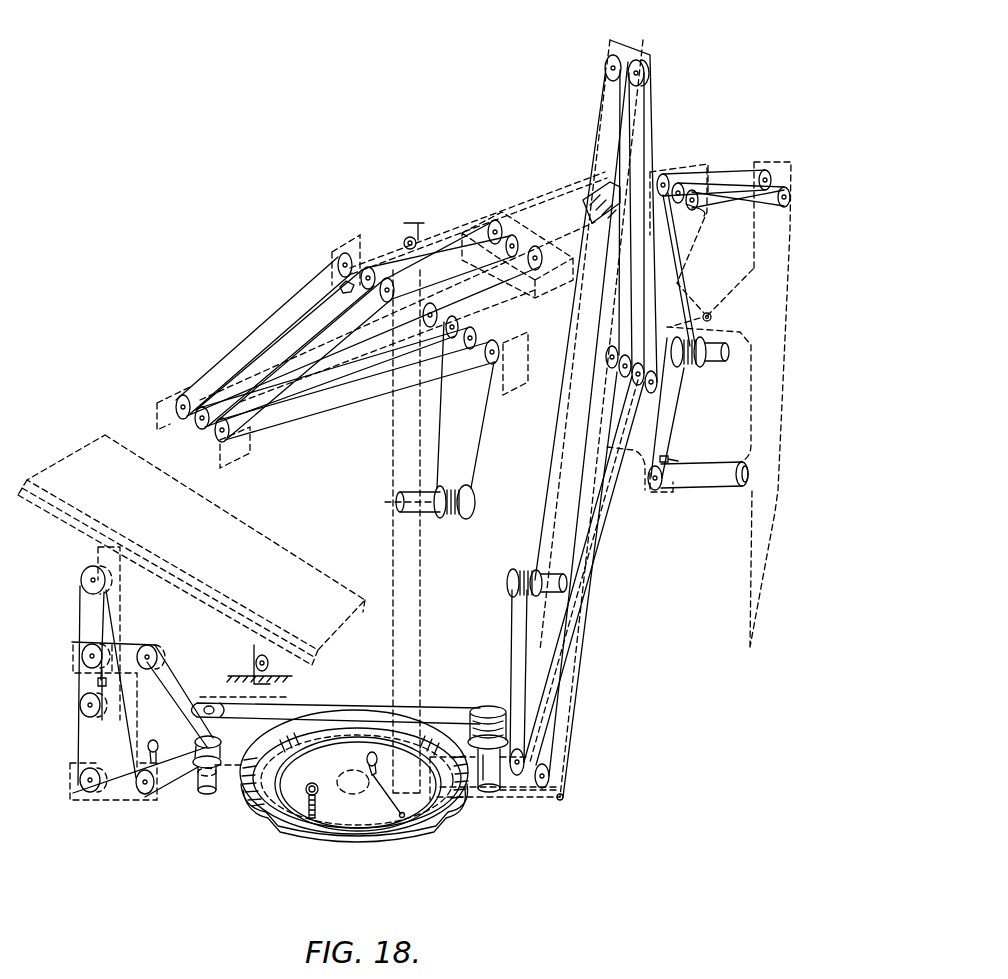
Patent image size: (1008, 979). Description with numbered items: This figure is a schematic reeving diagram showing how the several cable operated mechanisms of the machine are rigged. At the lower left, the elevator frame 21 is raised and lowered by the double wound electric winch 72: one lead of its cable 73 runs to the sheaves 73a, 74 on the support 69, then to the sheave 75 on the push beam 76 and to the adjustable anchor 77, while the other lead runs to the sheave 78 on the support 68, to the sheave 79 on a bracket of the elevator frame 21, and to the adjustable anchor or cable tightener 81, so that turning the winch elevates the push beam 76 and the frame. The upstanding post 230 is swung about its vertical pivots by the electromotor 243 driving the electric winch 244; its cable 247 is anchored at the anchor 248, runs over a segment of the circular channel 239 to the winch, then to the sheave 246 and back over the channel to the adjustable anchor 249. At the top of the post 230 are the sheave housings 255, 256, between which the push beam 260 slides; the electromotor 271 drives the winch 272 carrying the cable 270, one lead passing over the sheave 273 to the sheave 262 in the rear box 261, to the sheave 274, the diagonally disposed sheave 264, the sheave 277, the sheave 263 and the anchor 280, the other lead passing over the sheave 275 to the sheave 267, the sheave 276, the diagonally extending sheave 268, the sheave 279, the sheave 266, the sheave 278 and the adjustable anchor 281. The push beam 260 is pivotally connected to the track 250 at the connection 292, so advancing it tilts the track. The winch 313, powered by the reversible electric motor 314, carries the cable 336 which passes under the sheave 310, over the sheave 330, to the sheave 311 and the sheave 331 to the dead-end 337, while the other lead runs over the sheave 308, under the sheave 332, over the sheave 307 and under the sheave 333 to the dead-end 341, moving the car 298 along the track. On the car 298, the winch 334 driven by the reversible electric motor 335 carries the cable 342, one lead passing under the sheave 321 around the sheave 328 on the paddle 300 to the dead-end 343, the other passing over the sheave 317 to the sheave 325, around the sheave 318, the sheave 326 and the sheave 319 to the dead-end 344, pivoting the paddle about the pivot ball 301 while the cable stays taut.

The elevator frame 21 is at (270, 540).
The support 68 is at (118, 808).
The support 69 is at (122, 640).
The double wound electric winch 72 is at (199, 738).
The cable 73 is at (197, 763).
The sheave 73a is at (149, 655).
The sheave 74 is at (72, 643).
The sheave 75 is at (82, 710).
The push beam 76 is at (80, 607).
The adjustable anchor 77 is at (97, 682).
The sheave 78 is at (80, 795).
The sheave 79 is at (84, 574).
The adjustable anchor or cable tightener 81 is at (156, 763).
The upstanding post 230 is at (419, 572).
The circular channel 239 is at (358, 838).
The electromotor 243 is at (487, 770).
The electric winch 244 is at (484, 706).
The sheave 246 is at (208, 700).
The cable 247 is at (338, 704).
The anchor 248 is at (373, 792).
The adjustable anchor 249 is at (313, 783).
The track 250 is at (583, 688).
The sheave housing 255 is at (524, 390).
The sheave housing 256 is at (331, 256).
The push beam 260 is at (312, 348).
The box 261 is at (243, 460).
The sheave 262 is at (221, 442).
The sheave 263 is at (184, 394).
The diagonally disposed sheave 264 is at (200, 428).
The sheave 266 is at (495, 221).
The sheave 267 is at (537, 270).
The diagonally extending sheave 268 is at (515, 236).
The cable 270 is at (471, 449).
The electromotor 271 is at (398, 502).
The winch 272 is at (472, 500).
The sheave 273 is at (488, 364).
The sheave 274 is at (477, 340).
The sheave 275 is at (459, 329).
The sheave 276 is at (431, 303).
The sheave 277 is at (345, 252).
The sheave 278 is at (369, 266).
The sheave 279 is at (380, 292).
The anchor 280 is at (340, 288).
The adjustable anchor 281 is at (420, 223).
The pivotal connection 292 is at (588, 198).
The car 298 is at (702, 302).
The paddle 300 is at (786, 308).
The pivot ball 301 is at (712, 317).
The sheave 307 is at (645, 74).
The sheave 308 is at (605, 66).
The sheave 310 is at (520, 776).
The sheave 311 is at (546, 790).
The winch 313 is at (511, 586).
The reversible electric motor 314 is at (567, 584).
The sheave 317 is at (664, 175).
The sheave 318 is at (680, 184).
The sheave 319 is at (696, 196).
The sheave 321 is at (653, 490).
The sheave 325 is at (766, 170).
The sheave 326 is at (784, 207).
The sheave 328 is at (744, 484).
The sheave 330 is at (611, 350).
The sheave 331 is at (619, 370).
The sheave 332 is at (639, 386).
The sheave 333 is at (657, 386).
The winch 334 is at (686, 368).
The reversible electric motor 335 is at (719, 356).
The cable 336 is at (514, 623).
The dead-end 337 is at (616, 412).
The dead-end 341 is at (645, 50).
The cable 342 is at (663, 422).
The dead-end 343 is at (672, 459).
The dead-end 344 is at (706, 216).